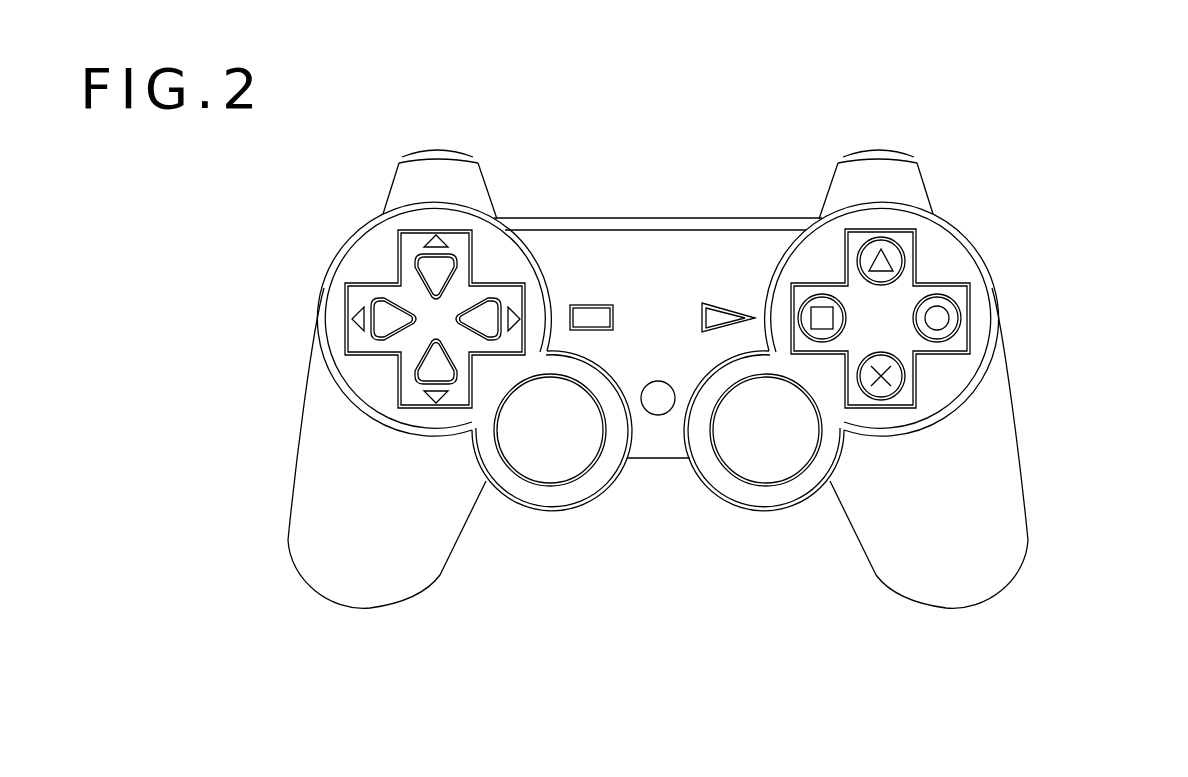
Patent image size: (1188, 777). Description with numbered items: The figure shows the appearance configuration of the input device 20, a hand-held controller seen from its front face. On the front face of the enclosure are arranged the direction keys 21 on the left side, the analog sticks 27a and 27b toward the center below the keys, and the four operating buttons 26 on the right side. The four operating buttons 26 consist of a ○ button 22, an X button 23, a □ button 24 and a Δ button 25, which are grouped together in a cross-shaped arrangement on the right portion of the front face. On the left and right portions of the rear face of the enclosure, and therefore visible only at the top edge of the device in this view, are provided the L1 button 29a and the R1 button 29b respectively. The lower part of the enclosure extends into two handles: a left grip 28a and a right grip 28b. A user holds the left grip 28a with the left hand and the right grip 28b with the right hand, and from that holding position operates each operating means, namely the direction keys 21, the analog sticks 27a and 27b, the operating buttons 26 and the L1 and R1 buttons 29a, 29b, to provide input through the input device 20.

The input device 20 is at (1060, 50).
The direction keys 21 is at (368, 293).
The ○ button 22 is at (948, 305).
The X button 23 is at (977, 412).
The □ button 24 is at (838, 318).
The Δ button 25 is at (893, 256).
The operating buttons 26 is at (976, 337).
The analog stick 27a is at (560, 457).
The analog stick 27b is at (778, 457).
The left grip 28a is at (360, 577).
The right grip 28b is at (967, 568).
The L1 button 29a is at (433, 148).
The R1 button 29b is at (873, 148).